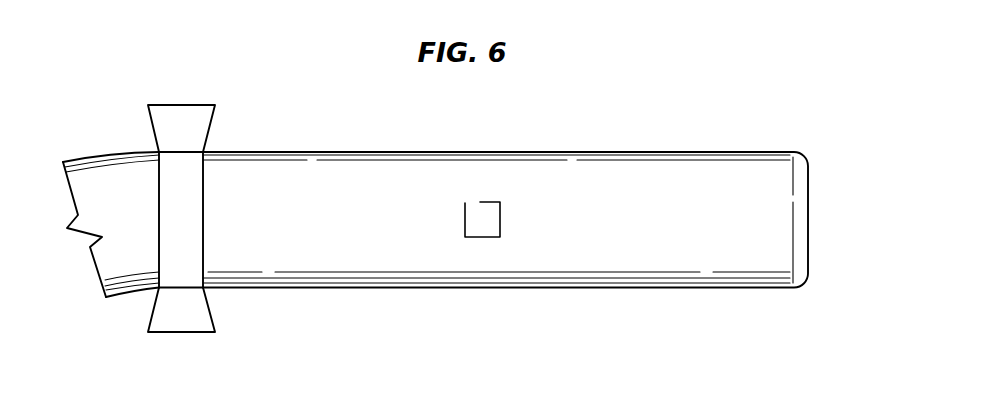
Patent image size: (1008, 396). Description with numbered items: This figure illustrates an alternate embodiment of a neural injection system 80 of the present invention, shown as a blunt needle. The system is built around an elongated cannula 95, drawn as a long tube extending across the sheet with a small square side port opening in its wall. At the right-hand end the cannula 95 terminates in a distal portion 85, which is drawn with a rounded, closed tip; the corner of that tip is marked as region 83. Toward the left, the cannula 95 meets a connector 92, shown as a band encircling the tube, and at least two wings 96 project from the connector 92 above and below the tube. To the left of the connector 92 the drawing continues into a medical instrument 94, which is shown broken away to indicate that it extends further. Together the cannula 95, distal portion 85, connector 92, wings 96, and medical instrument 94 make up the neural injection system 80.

The neural injection system 80 is at (659, 136).
The rounded end corner 83 is at (795, 150).
The distal portion 85 is at (813, 207).
The connector 92 is at (192, 183).
The medical instrument 94 is at (108, 177).
The cannula 95 is at (480, 205).
The wings 96 is at (169, 138).